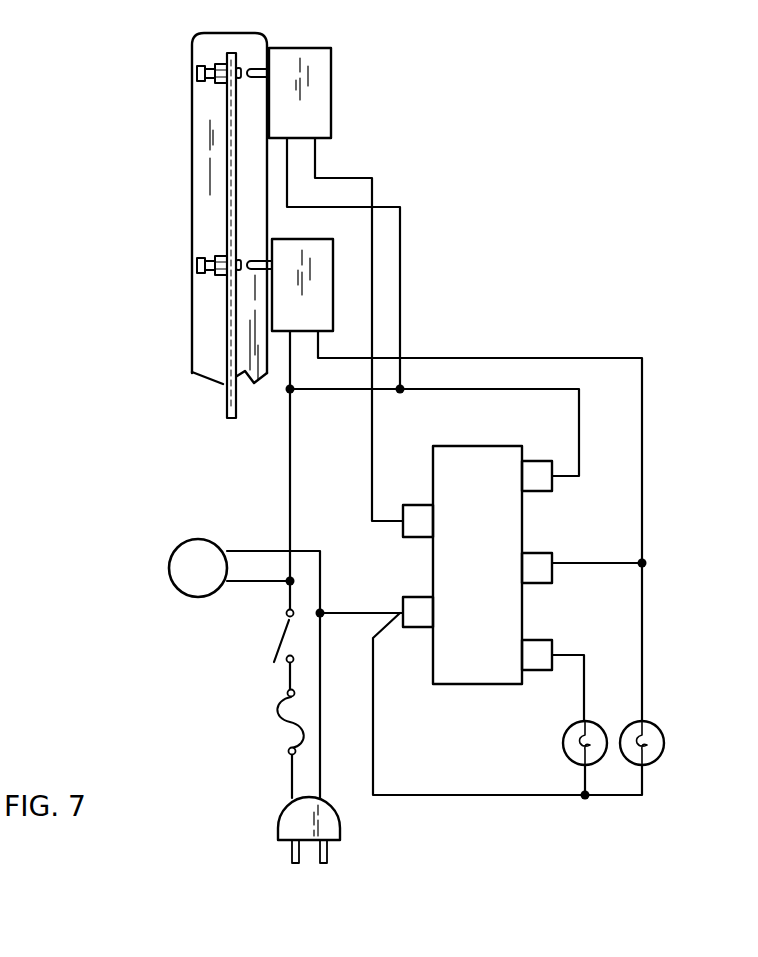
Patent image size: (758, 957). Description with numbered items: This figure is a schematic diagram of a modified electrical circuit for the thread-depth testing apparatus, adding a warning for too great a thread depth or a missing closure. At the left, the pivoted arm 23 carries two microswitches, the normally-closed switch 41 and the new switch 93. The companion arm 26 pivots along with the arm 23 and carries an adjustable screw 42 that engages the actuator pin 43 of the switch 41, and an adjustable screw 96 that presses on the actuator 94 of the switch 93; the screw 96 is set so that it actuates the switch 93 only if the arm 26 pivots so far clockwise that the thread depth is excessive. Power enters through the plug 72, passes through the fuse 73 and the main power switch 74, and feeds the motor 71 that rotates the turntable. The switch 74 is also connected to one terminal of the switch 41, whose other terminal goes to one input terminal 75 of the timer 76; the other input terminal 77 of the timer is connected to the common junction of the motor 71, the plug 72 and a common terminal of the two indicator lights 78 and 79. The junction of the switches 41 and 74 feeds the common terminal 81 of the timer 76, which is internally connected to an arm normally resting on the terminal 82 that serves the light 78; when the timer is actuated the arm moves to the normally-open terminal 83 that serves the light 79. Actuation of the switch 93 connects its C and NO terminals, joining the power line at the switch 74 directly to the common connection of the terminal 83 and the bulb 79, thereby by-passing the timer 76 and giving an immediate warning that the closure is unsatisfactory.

The arm 23 is at (190, 158).
The arm 26 is at (230, 397).
The microswitch 41 is at (332, 98).
The adjustable screw 42 is at (200, 80).
The actuator pin 43 is at (252, 72).
The motor 71 is at (177, 589).
The plug 72 is at (275, 830).
The fuse 73 is at (281, 720).
The main power switch 74 is at (283, 627).
The input terminal 75 is at (413, 505).
The timer 76 is at (465, 446).
The input terminal 77 is at (415, 627).
The indicator light 78 is at (561, 750).
The indicator light 79 is at (660, 722).
The common terminal 81 is at (540, 491).
The terminal 82 is at (543, 670).
The normally-open terminal 83 is at (540, 583).
The microswitch 93 is at (333, 285).
The actuator 94 is at (256, 262).
The adjustable screw 96 is at (200, 277).